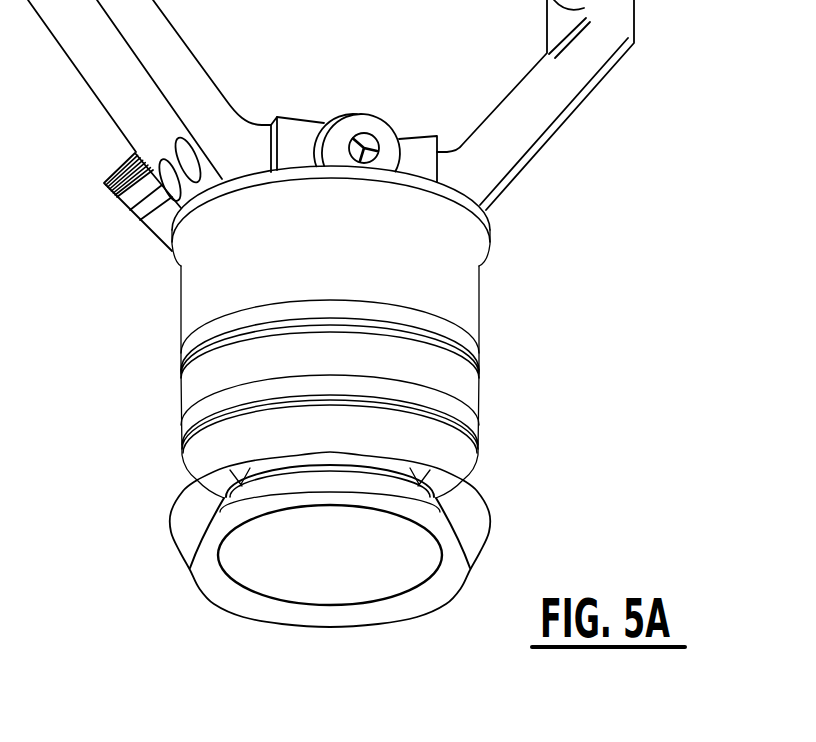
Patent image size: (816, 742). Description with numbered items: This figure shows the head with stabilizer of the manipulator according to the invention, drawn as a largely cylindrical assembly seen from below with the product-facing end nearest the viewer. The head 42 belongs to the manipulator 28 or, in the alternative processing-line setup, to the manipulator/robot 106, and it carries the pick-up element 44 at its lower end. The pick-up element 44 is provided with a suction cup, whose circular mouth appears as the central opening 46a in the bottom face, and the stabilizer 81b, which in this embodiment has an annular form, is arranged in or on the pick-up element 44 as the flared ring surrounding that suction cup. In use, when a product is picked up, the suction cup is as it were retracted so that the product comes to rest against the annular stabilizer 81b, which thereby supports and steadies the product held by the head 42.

The manipulator 28 is at (516, 292).
The manipulator/robot 106 is at (429, 272).
The head 42 is at (540, 396).
The pick-up element 44 is at (478, 638).
The light emission aperture 46a is at (192, 584).
The stabilizer 81b is at (175, 485).